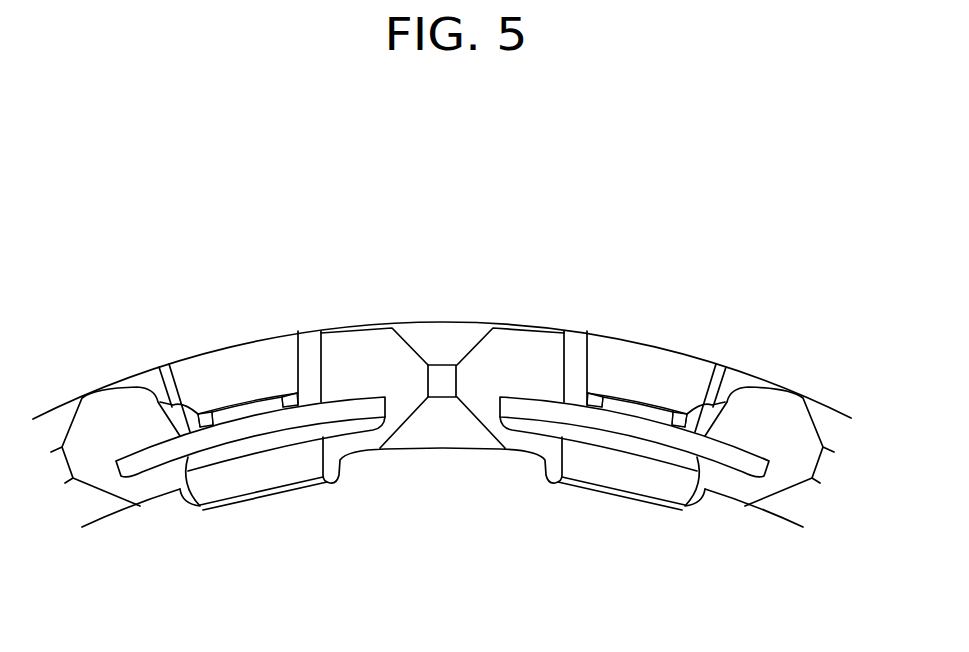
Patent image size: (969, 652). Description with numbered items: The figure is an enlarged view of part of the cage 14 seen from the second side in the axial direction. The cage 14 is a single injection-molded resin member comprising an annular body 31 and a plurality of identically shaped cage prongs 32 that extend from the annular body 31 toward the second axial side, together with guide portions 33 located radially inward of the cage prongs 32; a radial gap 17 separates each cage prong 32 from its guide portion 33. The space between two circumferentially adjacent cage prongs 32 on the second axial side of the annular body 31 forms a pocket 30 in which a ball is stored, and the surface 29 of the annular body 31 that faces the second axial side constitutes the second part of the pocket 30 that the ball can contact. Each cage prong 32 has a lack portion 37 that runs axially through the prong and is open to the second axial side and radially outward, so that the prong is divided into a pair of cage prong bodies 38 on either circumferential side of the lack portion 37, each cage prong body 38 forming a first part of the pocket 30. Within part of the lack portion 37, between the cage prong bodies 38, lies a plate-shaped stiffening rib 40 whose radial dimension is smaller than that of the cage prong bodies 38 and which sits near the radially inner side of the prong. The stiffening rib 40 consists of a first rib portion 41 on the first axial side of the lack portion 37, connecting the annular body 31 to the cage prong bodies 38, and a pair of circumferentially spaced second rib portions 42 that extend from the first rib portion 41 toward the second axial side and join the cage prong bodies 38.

The cage 14 is at (813, 383).
The gap 17 is at (188, 458).
The surface 29 is at (442, 383).
The pocket 30 is at (418, 425).
The annular body 31 is at (443, 321).
The cage prong 32 is at (374, 213).
The guide portion 33 is at (260, 500).
The lack portion 37 is at (150, 313).
The cage prong body 38 is at (165, 397).
The stiffening rib 40 is at (273, 440).
The first rib portion 41 is at (240, 408).
The second rib portion 42 is at (193, 398).